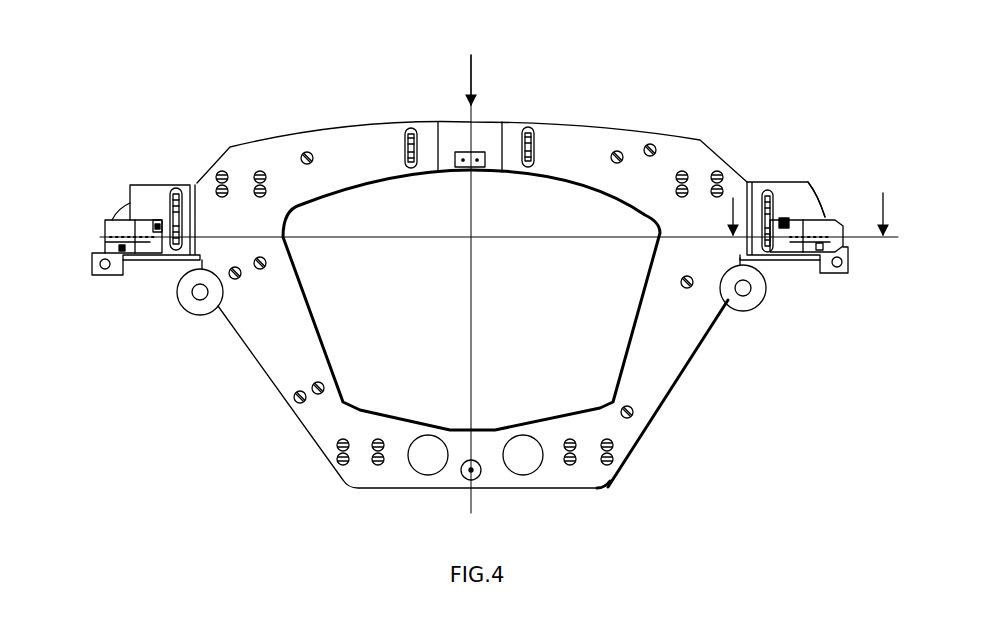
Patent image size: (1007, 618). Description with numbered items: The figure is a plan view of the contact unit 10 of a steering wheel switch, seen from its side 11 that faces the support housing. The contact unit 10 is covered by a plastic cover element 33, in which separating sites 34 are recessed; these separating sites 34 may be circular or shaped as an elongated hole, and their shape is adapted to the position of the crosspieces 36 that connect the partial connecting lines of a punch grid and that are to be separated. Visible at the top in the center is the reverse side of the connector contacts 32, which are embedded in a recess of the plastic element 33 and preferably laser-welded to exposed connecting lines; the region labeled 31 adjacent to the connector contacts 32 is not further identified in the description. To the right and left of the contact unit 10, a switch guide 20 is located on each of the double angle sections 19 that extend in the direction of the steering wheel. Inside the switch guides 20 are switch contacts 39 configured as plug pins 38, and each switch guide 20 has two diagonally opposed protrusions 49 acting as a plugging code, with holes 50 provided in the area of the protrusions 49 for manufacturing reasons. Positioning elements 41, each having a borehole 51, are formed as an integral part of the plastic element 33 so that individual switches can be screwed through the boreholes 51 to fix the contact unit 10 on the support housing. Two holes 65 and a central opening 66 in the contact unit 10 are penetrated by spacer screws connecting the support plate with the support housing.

The contact unit 10 is at (836, 149).
The side 11 is at (679, 340).
The double angle sections 19 is at (199, 177).
The switch guide 20 is at (110, 223).
The center bracket 31 is at (462, 153).
The connector contacts 32 is at (483, 146).
The plastic cover element 33 is at (671, 396).
The separating sites 34 is at (305, 154).
The crosspieces 36 is at (313, 155).
The plug pins 38 is at (135, 235).
The switch contacts 39 is at (116, 214).
The positioning elements 41 is at (181, 304).
The protrusions 49 is at (155, 220).
The holes 50 is at (160, 222).
The borehole 51 is at (102, 273).
The holes 65 is at (433, 471).
The central opening 66 is at (318, 333).